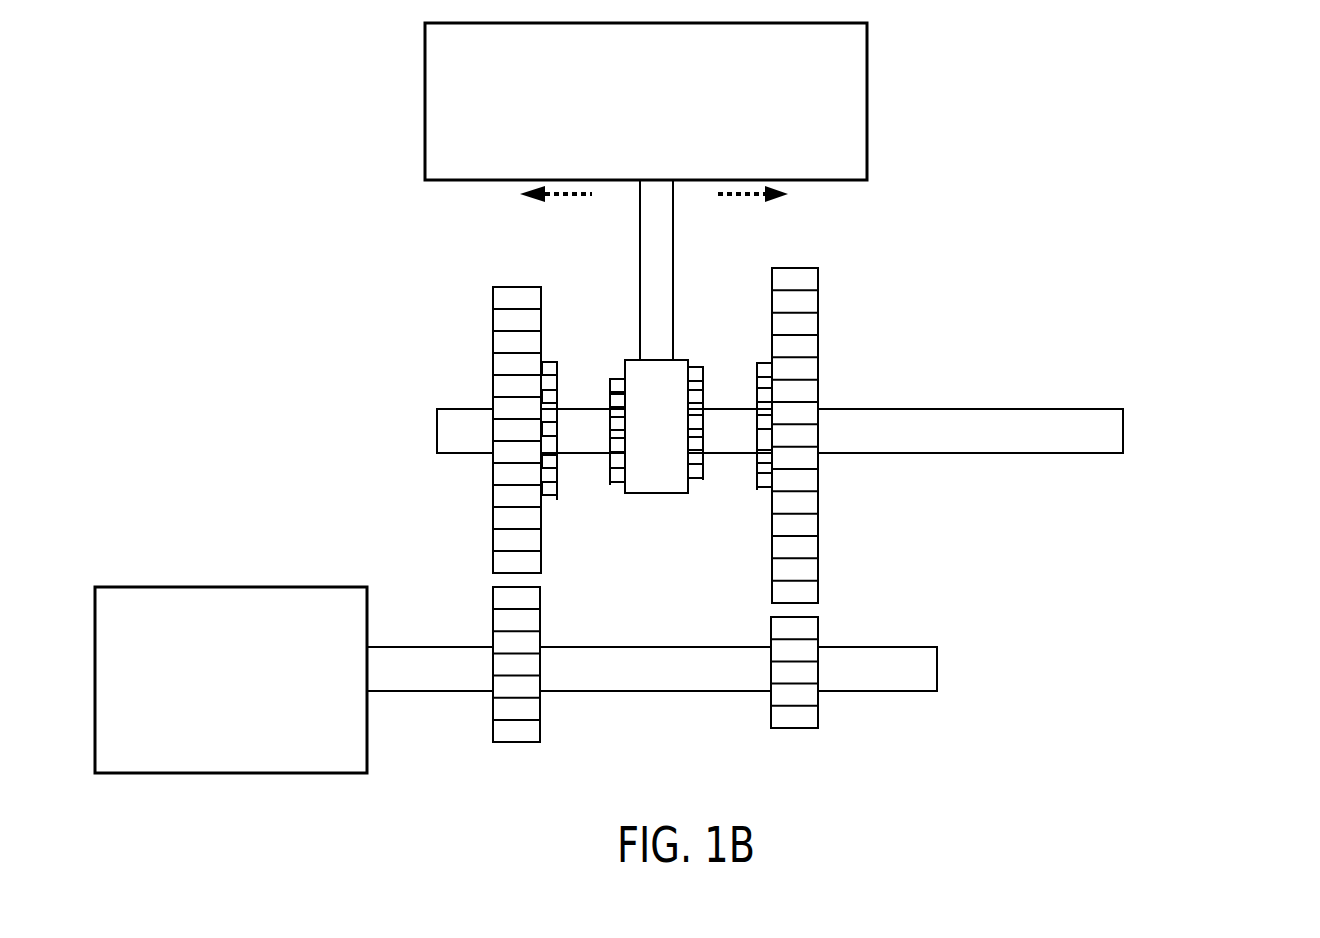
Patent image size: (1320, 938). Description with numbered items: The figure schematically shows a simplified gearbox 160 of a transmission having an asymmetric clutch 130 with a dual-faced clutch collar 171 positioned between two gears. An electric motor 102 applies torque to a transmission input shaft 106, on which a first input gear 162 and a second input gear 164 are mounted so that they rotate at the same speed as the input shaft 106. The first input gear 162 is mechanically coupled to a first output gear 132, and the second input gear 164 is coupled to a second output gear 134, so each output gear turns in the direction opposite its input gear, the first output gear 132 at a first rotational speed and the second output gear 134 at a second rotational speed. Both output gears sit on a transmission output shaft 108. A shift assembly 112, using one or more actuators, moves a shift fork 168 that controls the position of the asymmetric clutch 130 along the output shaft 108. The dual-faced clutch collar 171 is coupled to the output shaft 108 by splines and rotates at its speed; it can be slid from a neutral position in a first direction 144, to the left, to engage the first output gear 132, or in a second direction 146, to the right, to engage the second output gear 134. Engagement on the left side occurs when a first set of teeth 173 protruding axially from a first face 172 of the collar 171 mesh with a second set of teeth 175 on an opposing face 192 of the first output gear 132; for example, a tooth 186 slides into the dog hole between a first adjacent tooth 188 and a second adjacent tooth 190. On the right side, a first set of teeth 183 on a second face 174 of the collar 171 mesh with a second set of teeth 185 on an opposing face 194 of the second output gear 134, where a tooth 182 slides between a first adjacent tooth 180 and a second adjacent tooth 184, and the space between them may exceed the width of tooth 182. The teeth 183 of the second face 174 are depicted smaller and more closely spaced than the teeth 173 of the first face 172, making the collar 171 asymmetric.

The electric motor 102 is at (213, 691).
The transmission input shaft 106 is at (627, 646).
The transmission output shaft 108 is at (1098, 410).
The shift assembly 112 is at (627, 111).
The asymmetric clutch 130 is at (630, 306).
The first output gear 132 is at (493, 555).
The second output gear 134 is at (818, 540).
The first direction 144 is at (537, 197).
The second direction 146 is at (773, 200).
The simplified gearbox 160 is at (1228, 60).
The first input gear 162 is at (493, 723).
The second input gear 164 is at (770, 728).
The shift fork 168 is at (672, 215).
The dual-faced clutch collar 171 is at (638, 435).
The first face 172 is at (627, 358).
The first set of teeth 173 is at (606, 398).
The second face 174 is at (687, 358).
The second set of teeth 175 is at (565, 370).
The first adjacent tooth 180 is at (763, 493).
The tooth 182 is at (692, 478).
The first set of teeth 183 is at (697, 362).
The second adjacent tooth 184 is at (762, 473).
The second set of teeth 185 is at (752, 385).
The tooth 186 is at (615, 485).
The first adjacent tooth 188 is at (557, 470).
The second adjacent tooth 190 is at (557, 502).
The opposing face 192 is at (540, 287).
The opposing face 194 is at (773, 268).